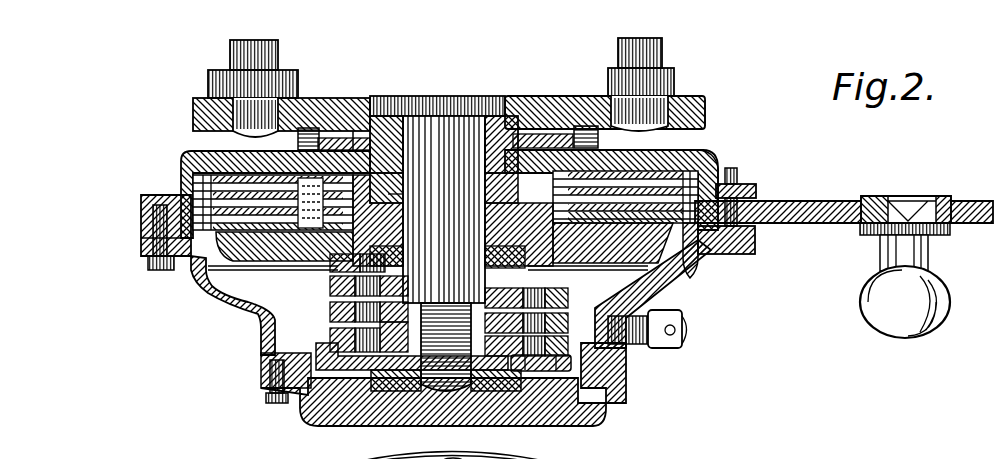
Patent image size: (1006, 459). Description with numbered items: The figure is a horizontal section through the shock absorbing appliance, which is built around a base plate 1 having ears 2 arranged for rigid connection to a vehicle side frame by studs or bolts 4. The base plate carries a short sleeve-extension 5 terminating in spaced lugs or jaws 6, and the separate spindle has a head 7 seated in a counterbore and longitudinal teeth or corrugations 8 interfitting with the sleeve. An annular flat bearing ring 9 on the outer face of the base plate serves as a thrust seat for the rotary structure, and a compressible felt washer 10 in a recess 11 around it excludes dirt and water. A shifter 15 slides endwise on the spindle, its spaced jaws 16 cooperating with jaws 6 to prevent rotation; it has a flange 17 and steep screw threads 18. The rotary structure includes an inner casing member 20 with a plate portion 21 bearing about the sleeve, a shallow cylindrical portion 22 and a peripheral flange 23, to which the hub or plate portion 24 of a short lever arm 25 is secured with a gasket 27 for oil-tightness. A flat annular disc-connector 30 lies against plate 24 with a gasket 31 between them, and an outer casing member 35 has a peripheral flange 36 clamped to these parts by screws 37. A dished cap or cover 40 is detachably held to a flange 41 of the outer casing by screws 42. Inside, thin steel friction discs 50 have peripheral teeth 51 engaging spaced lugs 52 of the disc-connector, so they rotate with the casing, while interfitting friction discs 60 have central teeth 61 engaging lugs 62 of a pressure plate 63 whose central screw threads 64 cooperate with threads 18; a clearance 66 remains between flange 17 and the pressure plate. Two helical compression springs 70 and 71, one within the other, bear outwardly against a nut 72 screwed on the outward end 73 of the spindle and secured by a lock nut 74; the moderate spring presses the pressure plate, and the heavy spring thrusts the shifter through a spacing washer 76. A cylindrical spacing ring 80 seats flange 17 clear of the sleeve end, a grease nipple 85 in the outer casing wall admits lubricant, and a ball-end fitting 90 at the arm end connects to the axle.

The base plate 1 is at (520, 97).
The ears 2 is at (697, 102).
The studs or bolts 4 is at (648, 46).
The sleeve-extension 5 is at (378, 150).
The lugs or jaws 6 is at (488, 185).
The head 7 is at (405, 102).
The longitudinal teeth or corrugations 8 is at (430, 125).
The bearing ring 9 is at (533, 128).
The compressible washer 10 is at (576, 118).
The recess 11 is at (340, 96).
The shifter 15 is at (395, 210).
The jaws 16 is at (395, 190).
The flange 17 is at (500, 215).
The screw threads 18 is at (395, 250).
The inner casing member 20 is at (705, 152).
The plate portion 21 is at (700, 140).
The cylindrical portion 22 is at (714, 160).
The peripheral flange 23 is at (750, 186).
The hub or plate portion 24 is at (740, 214).
The lever arm 25 is at (826, 200).
The gasket 27 is at (140, 200).
The disc-connector 30 is at (752, 232).
The gasket 31 is at (140, 222).
The outer casing member 35 is at (225, 300).
The peripheral flange 36 is at (136, 241).
The screws 37 is at (140, 258).
The cap or cover 40 is at (592, 412).
The flange 41 is at (285, 356).
The screws 42 is at (266, 392).
The friction discs 50 is at (685, 252).
The peripheral teeth 51 is at (692, 250).
The jaws or lugs 52 is at (712, 172).
The friction discs 60 is at (195, 255).
The teeth 61 is at (575, 195).
The lugs 62 is at (300, 186).
The pressure plate 63 is at (585, 258).
The screw threads 64 is at (500, 255).
The clearance 66 is at (350, 222).
The helical compression spring 70 is at (330, 362).
The helical compression spring 71 is at (520, 362).
The nut 72 is at (557, 365).
The outward end of spindle 73 is at (415, 372).
The lock nut 74 is at (490, 370).
The spacing washer 76 is at (350, 280).
The spacing ring 80 is at (345, 162).
The oil or grease nipple 85 is at (655, 342).
The ball-end fitting 90 is at (930, 297).